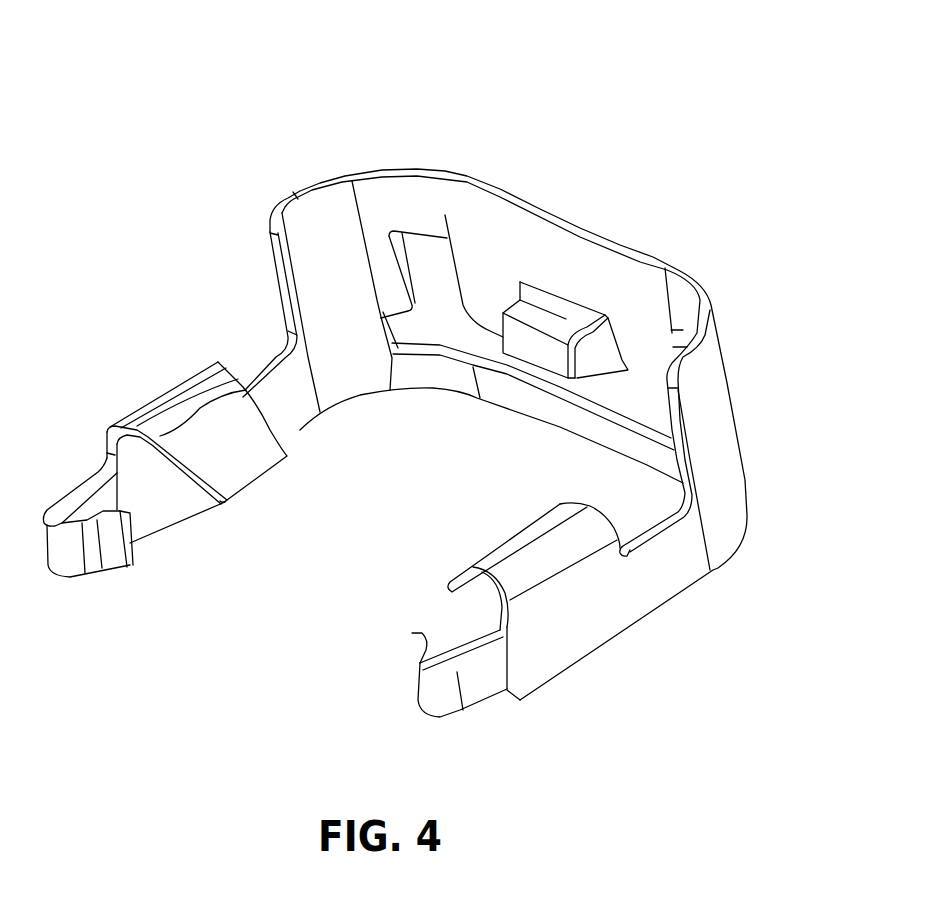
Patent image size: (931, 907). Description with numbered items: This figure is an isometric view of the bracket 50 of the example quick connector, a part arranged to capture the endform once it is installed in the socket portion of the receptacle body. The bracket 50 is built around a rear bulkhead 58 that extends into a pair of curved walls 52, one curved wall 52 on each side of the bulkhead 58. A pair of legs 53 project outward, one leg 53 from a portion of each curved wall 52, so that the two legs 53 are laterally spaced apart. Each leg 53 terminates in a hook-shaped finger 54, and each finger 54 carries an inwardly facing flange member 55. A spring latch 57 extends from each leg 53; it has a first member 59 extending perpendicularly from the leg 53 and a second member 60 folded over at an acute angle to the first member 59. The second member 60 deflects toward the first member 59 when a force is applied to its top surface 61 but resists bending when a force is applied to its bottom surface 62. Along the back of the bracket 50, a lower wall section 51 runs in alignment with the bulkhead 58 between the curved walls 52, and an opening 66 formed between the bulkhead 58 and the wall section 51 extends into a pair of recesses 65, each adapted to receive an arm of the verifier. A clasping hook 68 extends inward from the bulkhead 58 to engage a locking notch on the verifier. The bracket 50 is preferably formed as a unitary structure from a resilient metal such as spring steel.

The bracket 50 is at (281, 61).
The lower wall section 51 is at (593, 443).
The curved wall 52 is at (308, 183).
The leg 53 is at (303, 417).
The hook-shaped finger 54 is at (65, 567).
The flange member 55 is at (117, 557).
The spring latch 57 is at (147, 327).
The rear bulkhead 58 is at (523, 235).
The first member 59 is at (105, 432).
The second member 60 is at (210, 500).
The top surface 61 is at (253, 447).
The bottom surface 62 is at (473, 585).
The recess 65 is at (427, 258).
The opening 66 is at (540, 370).
The clasping hook 68 is at (578, 320).